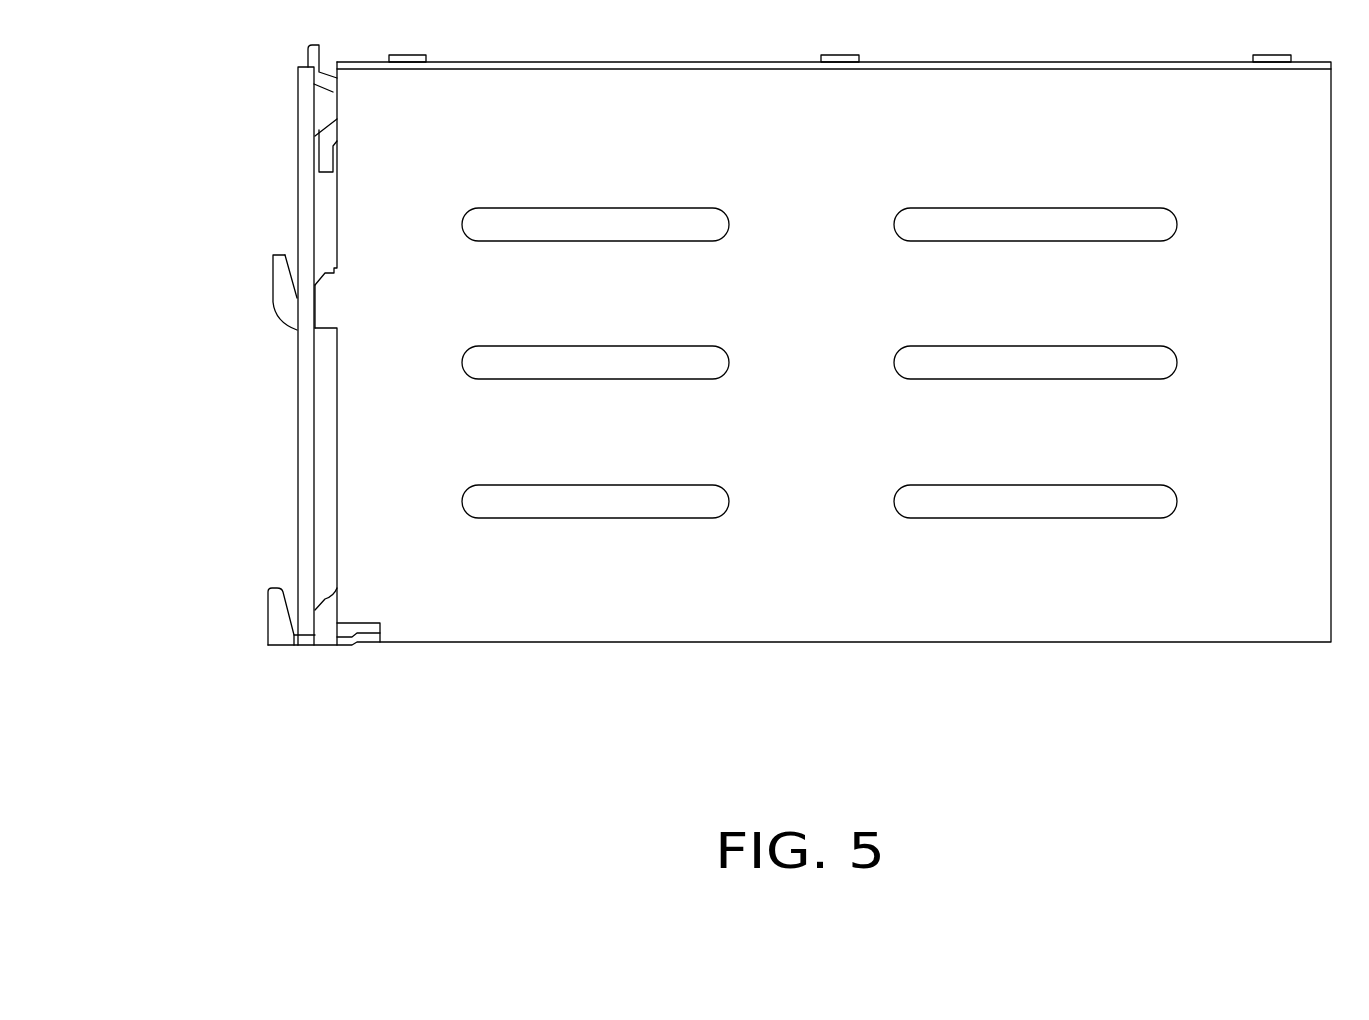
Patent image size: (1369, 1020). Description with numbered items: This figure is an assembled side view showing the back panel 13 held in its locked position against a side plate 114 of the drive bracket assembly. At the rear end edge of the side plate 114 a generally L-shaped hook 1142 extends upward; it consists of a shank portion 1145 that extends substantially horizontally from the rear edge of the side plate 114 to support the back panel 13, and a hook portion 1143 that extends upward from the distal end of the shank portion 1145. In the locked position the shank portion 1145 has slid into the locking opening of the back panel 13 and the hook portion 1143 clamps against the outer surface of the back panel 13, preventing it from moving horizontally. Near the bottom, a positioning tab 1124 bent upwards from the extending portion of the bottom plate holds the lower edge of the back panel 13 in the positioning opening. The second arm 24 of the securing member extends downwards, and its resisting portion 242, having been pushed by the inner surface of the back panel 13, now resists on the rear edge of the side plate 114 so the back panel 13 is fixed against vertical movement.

The side plate 114 is at (650, 605).
The back panel 13 is at (307, 90).
The second arm 24 is at (320, 135).
The resisting portion 242 is at (323, 162).
The hook 1142 is at (185, 312).
The hook portion 1143 is at (278, 295).
The shank portion 1145 is at (323, 320).
The positioning tab 1124 is at (278, 632).